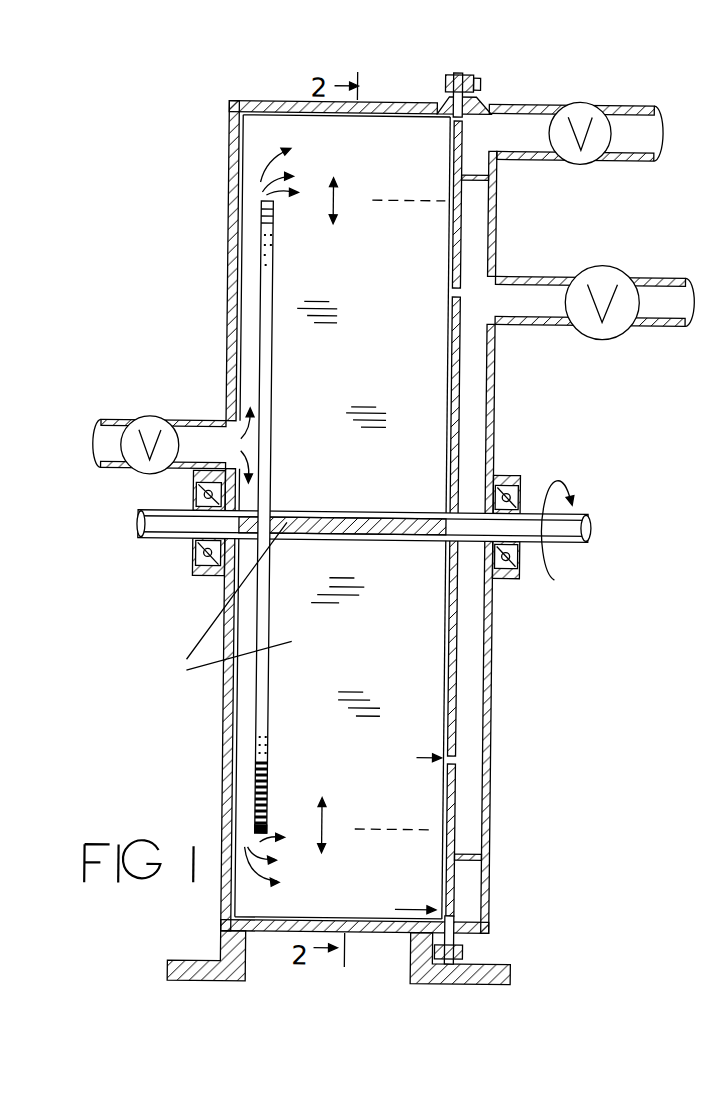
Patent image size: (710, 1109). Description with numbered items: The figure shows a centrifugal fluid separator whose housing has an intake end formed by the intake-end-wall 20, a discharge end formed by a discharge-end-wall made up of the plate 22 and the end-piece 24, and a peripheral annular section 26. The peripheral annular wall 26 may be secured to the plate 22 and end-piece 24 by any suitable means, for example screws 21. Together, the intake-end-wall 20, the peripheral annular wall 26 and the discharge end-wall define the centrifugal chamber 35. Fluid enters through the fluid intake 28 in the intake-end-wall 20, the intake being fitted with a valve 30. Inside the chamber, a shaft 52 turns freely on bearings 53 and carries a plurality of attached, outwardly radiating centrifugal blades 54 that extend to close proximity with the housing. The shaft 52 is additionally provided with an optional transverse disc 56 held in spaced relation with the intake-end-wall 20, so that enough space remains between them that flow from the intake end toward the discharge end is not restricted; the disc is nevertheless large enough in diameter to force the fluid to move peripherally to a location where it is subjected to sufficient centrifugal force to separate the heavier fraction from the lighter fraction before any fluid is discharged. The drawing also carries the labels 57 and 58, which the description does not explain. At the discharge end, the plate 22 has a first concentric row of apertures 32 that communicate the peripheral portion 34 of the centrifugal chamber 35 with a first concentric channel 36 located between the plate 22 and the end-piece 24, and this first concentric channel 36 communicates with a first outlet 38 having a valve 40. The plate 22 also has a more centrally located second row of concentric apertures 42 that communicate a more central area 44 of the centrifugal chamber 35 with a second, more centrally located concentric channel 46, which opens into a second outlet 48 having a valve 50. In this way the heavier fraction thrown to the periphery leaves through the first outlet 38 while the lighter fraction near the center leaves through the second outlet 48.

The intake-end-wall 20 is at (232, 323).
The screws 21 is at (478, 86).
The plate 22 is at (455, 383).
The end-piece 24 is at (490, 425).
The peripheral annular section 26 is at (243, 98).
The fluid intake 28 is at (200, 428).
The valve 30 is at (145, 420).
The first concentric row of apertures 32 is at (466, 119).
The peripheral portion 34 is at (443, 123).
The centrifugal chamber 35 is at (351, 662).
The first concentric channel 36 is at (479, 166).
The first outlet 38 is at (625, 132).
The valve 40 is at (593, 152).
The second row of concentric apertures 42 is at (463, 288).
The central area 44 is at (443, 290).
The second concentric channel 46 is at (476, 347).
The second outlet 48 is at (657, 292).
The valve 50 is at (610, 325).
The shaft 52 is at (590, 527).
The bearings 53 is at (521, 497).
The centrifugal blades 54 is at (220, 602).
The transverse disc 56 is at (272, 393).
The liner 57 is at (248, 262).
The liquid level 58 is at (416, 205).